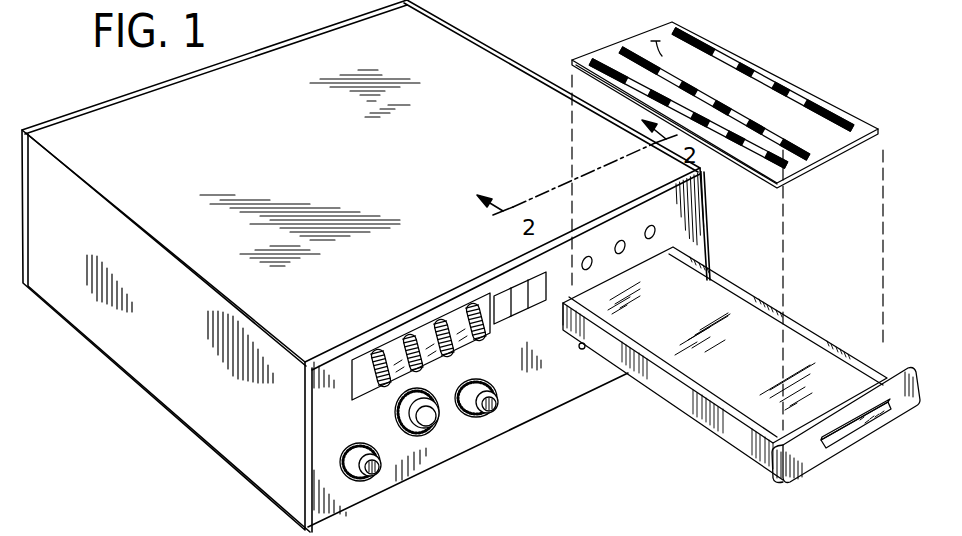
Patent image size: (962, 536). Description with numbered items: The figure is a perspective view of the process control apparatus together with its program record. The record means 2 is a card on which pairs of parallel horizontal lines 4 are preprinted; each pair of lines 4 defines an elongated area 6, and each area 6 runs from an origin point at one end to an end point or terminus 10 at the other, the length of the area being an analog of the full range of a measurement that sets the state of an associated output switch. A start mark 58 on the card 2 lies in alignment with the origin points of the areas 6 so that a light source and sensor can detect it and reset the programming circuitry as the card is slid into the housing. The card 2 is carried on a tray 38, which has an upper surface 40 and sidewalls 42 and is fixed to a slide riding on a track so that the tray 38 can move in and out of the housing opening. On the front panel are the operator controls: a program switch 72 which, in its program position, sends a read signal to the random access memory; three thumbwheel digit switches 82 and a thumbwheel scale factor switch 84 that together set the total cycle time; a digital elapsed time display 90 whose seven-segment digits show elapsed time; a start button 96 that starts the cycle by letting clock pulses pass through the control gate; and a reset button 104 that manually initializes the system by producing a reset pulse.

The record means 2 is at (725, 101).
The parallel horizontal lines 4 is at (772, 118).
The elongated areas 6 is at (630, 48).
The end point or terminus 10 is at (850, 132).
The start mark 58 is at (668, 55).
The tray 38 is at (741, 365).
The upper surface 40 is at (682, 324).
The sidewalls 42 is at (800, 330).
The program switch 72 is at (430, 423).
The thumbwheel digit switches 82 is at (400, 340).
The thumbwheel scale factor switch 84 is at (473, 337).
The digital elapsed time display 90 is at (500, 272).
The start button 96 is at (489, 404).
The reset button 104 is at (370, 477).